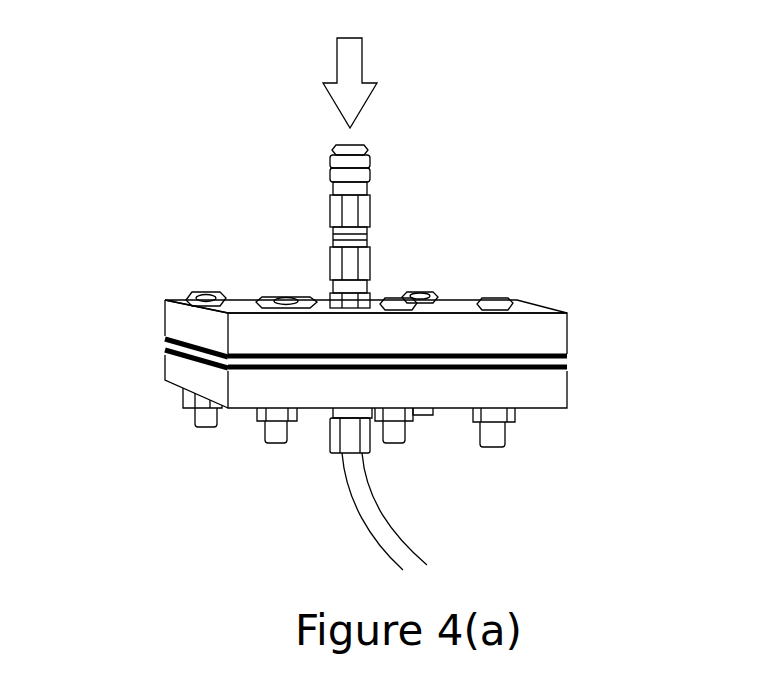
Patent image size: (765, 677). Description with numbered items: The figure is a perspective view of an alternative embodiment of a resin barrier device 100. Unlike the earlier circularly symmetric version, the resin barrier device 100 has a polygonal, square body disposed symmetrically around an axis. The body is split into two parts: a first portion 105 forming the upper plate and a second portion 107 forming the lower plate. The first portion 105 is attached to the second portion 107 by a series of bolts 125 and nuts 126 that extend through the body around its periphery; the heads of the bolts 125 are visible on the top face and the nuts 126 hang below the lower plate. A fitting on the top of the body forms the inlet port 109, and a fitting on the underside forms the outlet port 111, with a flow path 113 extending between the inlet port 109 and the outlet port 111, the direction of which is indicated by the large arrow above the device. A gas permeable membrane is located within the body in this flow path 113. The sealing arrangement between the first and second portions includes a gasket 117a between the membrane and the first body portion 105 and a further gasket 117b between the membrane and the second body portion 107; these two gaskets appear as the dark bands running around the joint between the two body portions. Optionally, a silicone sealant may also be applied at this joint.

The resin barrier device 100 is at (150, 130).
The first portion of the body 105 is at (543, 330).
The second portion of the body 107 is at (540, 388).
The inlet port 109 is at (372, 255).
The outlet port 111 is at (337, 437).
The flow path 113 is at (350, 68).
The gasket 117a is at (165, 351).
The further gasket 117b is at (366, 359).
The bolts 125 is at (207, 292).
The nuts 126 is at (185, 395).